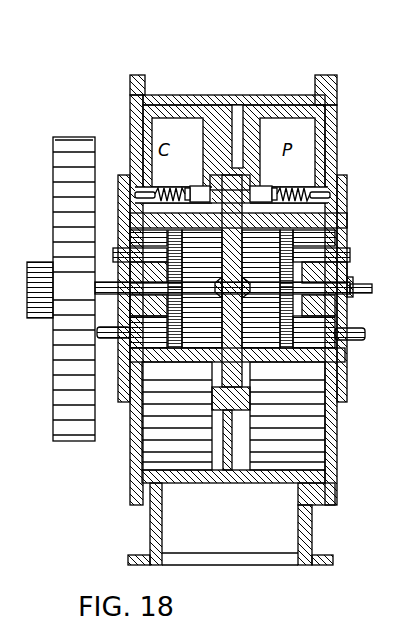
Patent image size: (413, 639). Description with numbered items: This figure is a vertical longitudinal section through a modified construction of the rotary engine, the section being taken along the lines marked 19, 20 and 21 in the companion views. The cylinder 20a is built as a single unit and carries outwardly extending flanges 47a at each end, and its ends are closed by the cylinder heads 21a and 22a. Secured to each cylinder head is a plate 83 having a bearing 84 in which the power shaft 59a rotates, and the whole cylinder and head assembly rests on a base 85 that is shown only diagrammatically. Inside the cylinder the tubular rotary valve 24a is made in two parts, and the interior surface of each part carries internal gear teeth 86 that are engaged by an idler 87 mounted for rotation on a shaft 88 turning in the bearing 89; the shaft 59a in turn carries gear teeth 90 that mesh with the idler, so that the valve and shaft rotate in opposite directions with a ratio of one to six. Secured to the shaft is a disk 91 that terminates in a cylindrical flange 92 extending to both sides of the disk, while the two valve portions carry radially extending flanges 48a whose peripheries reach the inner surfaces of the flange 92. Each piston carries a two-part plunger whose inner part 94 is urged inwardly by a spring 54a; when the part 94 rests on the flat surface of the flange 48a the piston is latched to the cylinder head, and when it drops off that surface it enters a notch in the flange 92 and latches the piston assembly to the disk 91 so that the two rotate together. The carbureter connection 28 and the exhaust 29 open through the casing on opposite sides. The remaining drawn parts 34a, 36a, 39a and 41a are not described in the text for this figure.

The outwardly extending flange 47a is at (146, 77).
The cylinder 20a is at (162, 95).
The section line 21 is at (250, 90).
The section line 20 is at (238, 90).
The section line 19 is at (328, 63).
The cylinder head 21a is at (135, 125).
The cylinder head 22a is at (333, 133).
The plate 83 is at (118, 180).
The inner part of plunger 94 is at (197, 187).
The spring 54a is at (167, 187).
The cylindrical flange 92 is at (255, 185).
The rotary valve 24a is at (347, 213).
The shaft 88 is at (113, 255).
The bearing 89 is at (347, 245).
The bearing 84 is at (350, 275).
The idler 87 is at (276, 243).
The gear teeth 90 is at (183, 271).
The disk 91 is at (238, 318).
The internal gear teeth 86 is at (182, 328).
The carbureter connection 28 is at (110, 340).
The exhaust 29 is at (355, 342).
The shaft 59a is at (372, 294).
The radially extending flange 48a is at (153, 392).
The center block 41a is at (249, 400).
The rod 36a is at (249, 410).
The fluid chamber 34a is at (224, 440).
The fluid chamber 39a is at (242, 438).
The base 85 is at (152, 525).